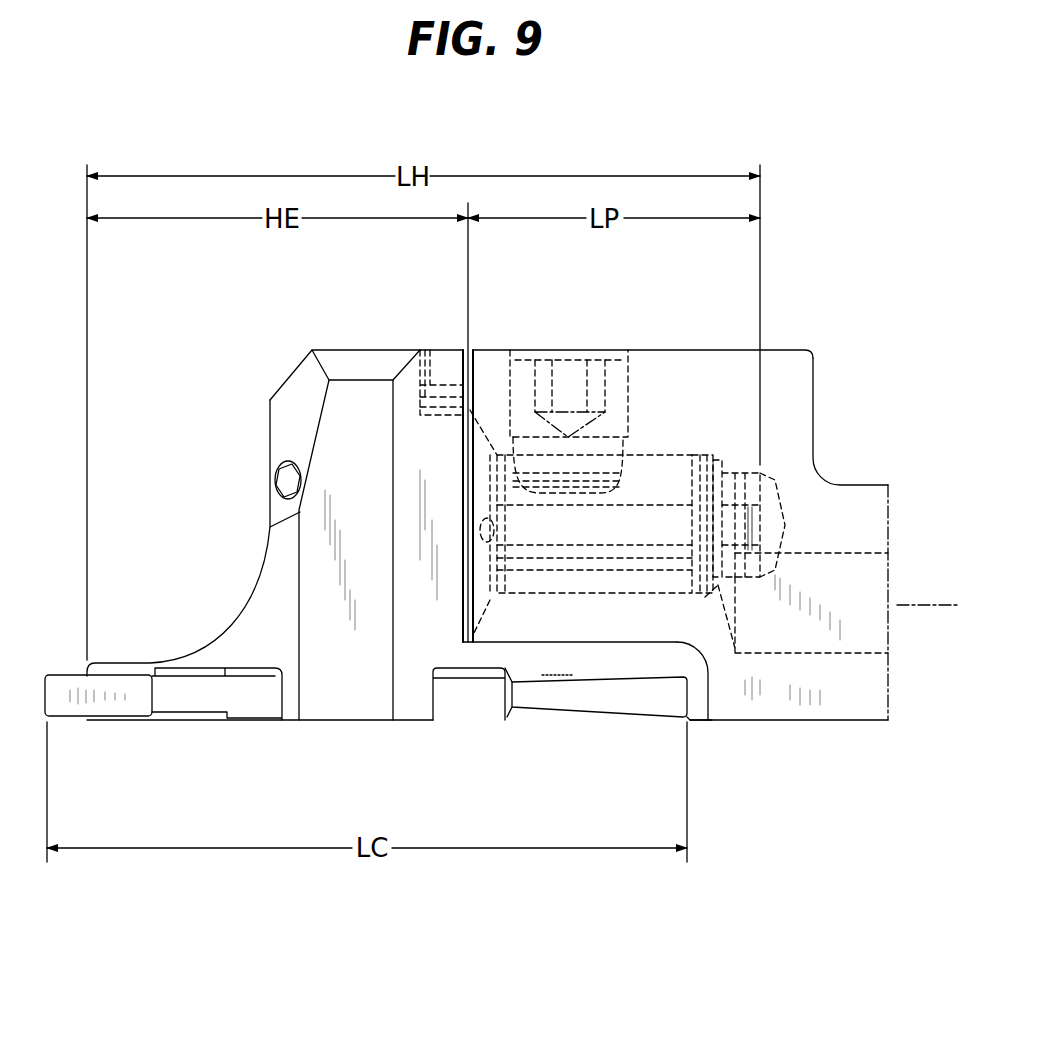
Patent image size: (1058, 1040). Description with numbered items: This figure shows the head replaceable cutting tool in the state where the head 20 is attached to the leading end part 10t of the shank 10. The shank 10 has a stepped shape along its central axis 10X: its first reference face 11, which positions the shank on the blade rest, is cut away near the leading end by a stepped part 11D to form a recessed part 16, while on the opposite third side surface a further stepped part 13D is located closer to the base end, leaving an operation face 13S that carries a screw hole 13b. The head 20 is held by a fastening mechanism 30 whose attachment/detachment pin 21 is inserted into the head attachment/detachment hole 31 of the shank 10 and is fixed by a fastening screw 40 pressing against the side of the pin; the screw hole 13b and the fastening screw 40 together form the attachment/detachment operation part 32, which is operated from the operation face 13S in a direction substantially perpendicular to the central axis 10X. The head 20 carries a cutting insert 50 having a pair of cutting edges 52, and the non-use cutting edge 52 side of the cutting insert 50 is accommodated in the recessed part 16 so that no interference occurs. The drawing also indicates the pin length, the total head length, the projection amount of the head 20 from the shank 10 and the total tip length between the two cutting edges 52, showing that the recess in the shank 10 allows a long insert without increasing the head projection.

The shank 10 is at (857, 695).
The leading end part 10t is at (705, 810).
The central axis 10X is at (913, 607).
The first reference face 11 is at (781, 723).
The stepped part 11D is at (695, 723).
The operation face 13S is at (652, 347).
The stepped part 13D is at (867, 330).
The screw hole 13b is at (616, 400).
The recessed part 16 is at (556, 659).
The head 20 is at (343, 440).
The attachment/detachment pin 21 is at (668, 452).
The fastening mechanism 30 is at (448, 338).
The head attachment/detachment hole 31 is at (545, 592).
The attachment/detachment operation part 32 is at (561, 334).
The fastening screw 40 is at (632, 413).
The cutting insert 50 is at (470, 700).
The cutting edge 52 is at (60, 698).